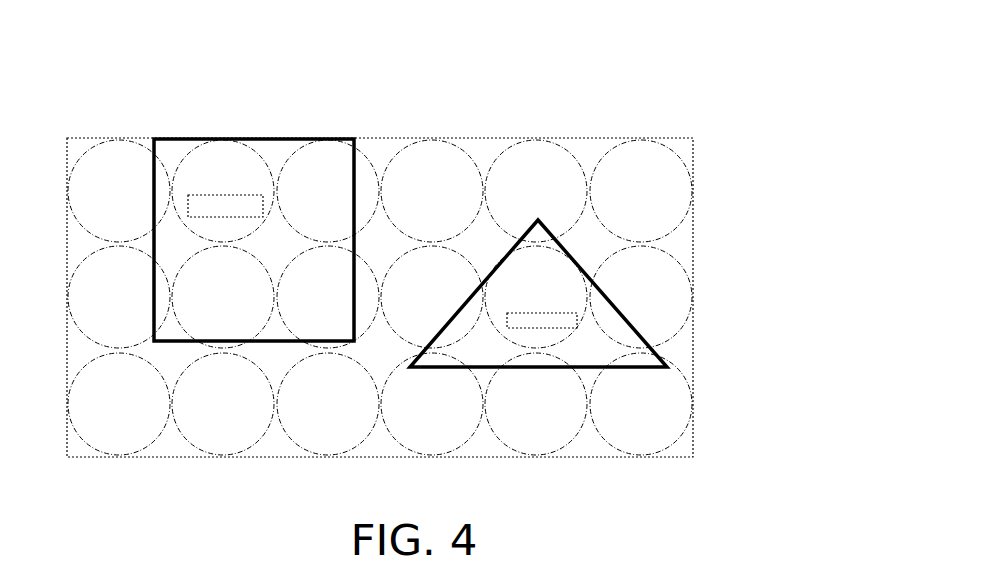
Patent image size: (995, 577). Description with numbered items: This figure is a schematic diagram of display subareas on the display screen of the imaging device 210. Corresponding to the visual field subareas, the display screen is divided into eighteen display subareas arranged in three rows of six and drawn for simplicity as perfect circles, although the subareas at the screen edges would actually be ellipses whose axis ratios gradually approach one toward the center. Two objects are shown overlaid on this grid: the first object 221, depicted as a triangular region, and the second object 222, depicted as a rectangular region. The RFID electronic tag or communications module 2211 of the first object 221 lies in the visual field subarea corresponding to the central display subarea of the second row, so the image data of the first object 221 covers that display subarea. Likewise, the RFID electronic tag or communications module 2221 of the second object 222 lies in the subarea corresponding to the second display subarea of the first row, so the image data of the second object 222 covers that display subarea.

The imaging device 210 is at (590, 138).
The second object 222 is at (259, 155).
The RFID electronic tag (or communications module) of the second object 2221 is at (227, 210).
The first object 221 is at (562, 265).
The RFID electronic tag (or communications module) of the first object 2211 is at (533, 322).